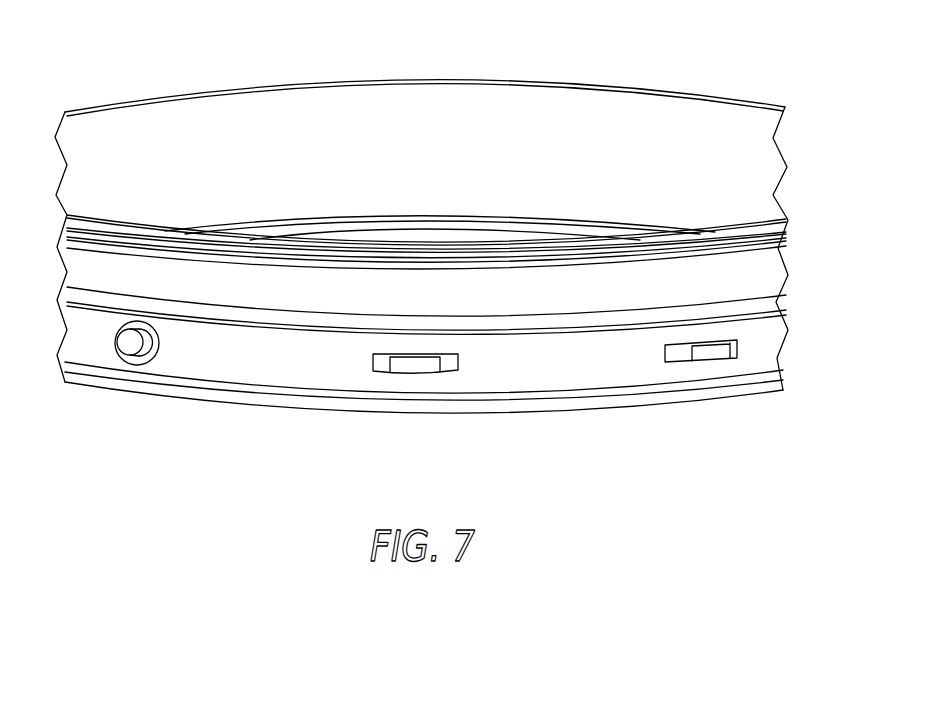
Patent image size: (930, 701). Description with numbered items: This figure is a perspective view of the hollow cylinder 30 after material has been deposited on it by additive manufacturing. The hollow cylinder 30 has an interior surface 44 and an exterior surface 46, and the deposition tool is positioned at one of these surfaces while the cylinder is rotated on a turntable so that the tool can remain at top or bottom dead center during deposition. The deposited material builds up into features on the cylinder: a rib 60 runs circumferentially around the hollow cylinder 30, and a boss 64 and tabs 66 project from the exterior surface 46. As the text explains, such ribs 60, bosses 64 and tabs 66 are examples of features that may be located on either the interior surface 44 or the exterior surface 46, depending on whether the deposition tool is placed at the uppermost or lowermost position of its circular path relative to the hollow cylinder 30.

The hollow cylinder 30 is at (421, 242).
The interior surface 44 is at (428, 164).
The exterior surface 46 is at (578, 376).
The rib 60 is at (488, 218).
The boss 64 is at (128, 368).
The tab 66 is at (420, 373).